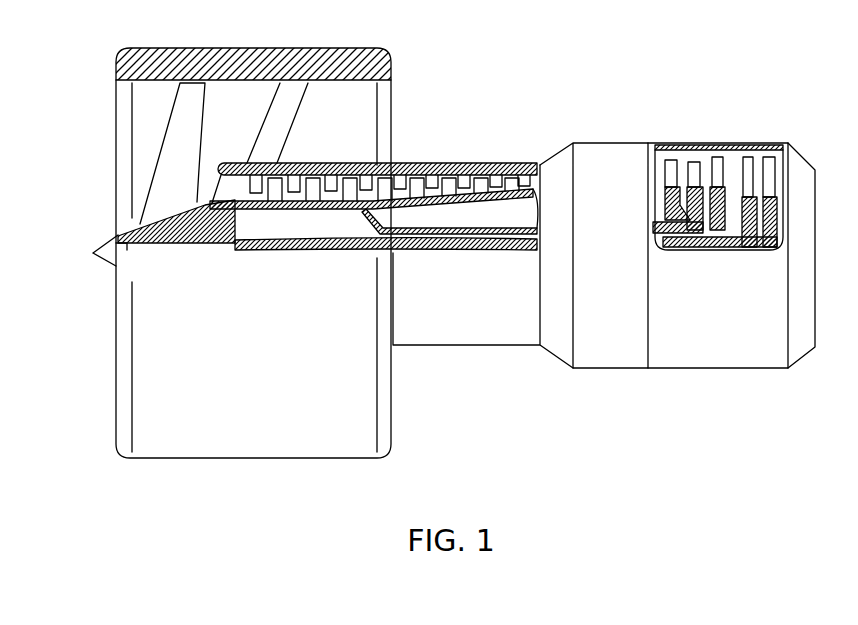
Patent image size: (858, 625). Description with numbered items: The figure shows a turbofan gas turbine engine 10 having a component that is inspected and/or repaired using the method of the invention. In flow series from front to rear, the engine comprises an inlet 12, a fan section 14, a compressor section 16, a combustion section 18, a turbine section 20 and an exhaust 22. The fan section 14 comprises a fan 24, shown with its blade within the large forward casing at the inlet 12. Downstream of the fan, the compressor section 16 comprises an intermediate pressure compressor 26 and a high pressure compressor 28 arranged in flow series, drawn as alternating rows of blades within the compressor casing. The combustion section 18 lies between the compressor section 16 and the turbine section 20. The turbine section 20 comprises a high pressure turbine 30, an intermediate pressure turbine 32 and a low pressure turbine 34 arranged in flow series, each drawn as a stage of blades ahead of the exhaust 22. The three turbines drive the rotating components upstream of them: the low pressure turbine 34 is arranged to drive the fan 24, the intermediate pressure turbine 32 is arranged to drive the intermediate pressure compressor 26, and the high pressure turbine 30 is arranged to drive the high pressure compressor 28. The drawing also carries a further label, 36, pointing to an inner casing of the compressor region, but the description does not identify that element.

The turbofan gas turbine engine 10 is at (587, 72).
The inlet 12 is at (125, 350).
The fan section 14 is at (277, 423).
The compressor section 16 is at (458, 332).
The combustion section 18 is at (621, 347).
The turbine section 20 is at (726, 346).
The exhaust 22 is at (800, 345).
The fan 24 is at (175, 135).
The intermediate pressure compressor 26 is at (358, 158).
The high pressure compressor 28 is at (475, 161).
The high pressure turbine 30 is at (672, 152).
The intermediate pressure turbine 32 is at (708, 152).
The low pressure turbine 34 is at (757, 152).
The compressor inner casing 36 is at (305, 209).